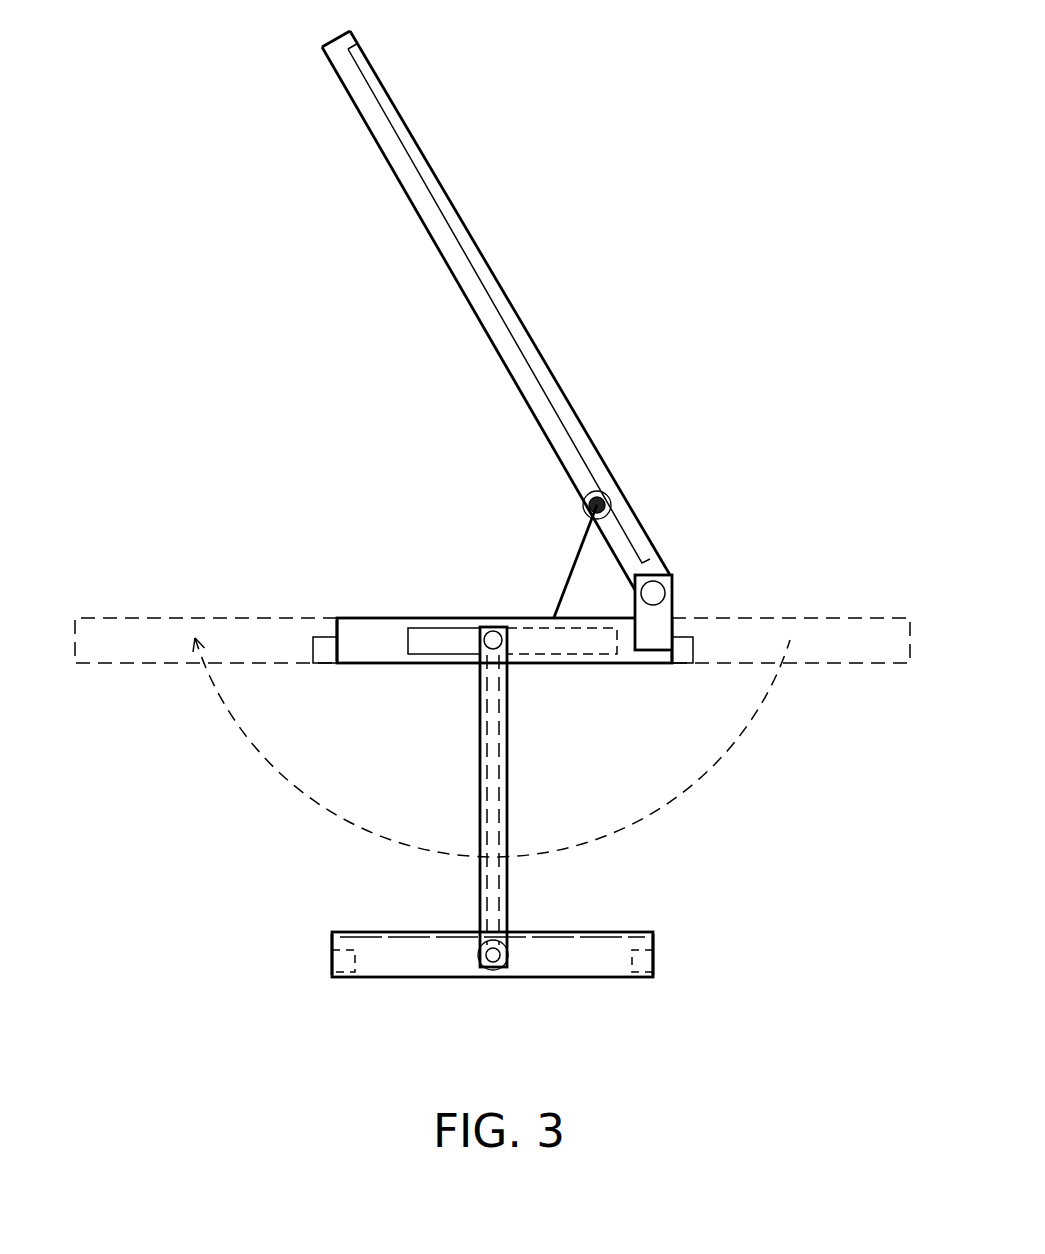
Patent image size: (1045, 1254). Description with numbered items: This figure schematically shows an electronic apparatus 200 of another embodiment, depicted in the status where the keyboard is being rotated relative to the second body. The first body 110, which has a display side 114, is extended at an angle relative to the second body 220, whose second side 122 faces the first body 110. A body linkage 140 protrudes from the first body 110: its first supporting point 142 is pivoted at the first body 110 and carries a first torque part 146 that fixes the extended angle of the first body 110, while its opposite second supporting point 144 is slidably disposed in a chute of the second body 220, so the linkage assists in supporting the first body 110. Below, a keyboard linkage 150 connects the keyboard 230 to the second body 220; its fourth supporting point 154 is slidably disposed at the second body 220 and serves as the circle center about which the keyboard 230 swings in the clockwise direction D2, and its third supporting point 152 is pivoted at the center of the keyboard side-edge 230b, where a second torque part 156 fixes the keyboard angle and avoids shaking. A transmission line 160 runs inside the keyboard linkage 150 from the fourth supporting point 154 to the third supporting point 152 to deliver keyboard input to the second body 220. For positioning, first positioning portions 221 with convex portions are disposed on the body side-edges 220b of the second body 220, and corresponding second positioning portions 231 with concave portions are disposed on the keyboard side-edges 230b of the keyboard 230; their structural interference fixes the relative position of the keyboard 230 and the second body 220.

The electronic apparatus 200 is at (552, 72).
The first body 110 is at (326, 52).
The display side 114 is at (407, 126).
The second side 122 is at (378, 145).
The first supporting point 142 is at (601, 492).
The first torque part 146 is at (588, 507).
The body linkage 140 is at (582, 540).
The second supporting point 144 is at (545, 650).
The second body 220 is at (368, 660).
The body side-edge 220b is at (336, 627).
The first positioning portion 221 is at (325, 648).
The fourth supporting point 154 is at (492, 631).
The keyboard linkage 150 is at (508, 810).
The transmission line 160 is at (500, 770).
The second torque part 156 is at (506, 941).
The third supporting point 152 is at (494, 971).
The keyboard 230 is at (435, 983).
The keyboard side-edge 230b is at (332, 938).
The second positioning portion 231 is at (332, 962).
The clockwise direction D2 is at (492, 737).